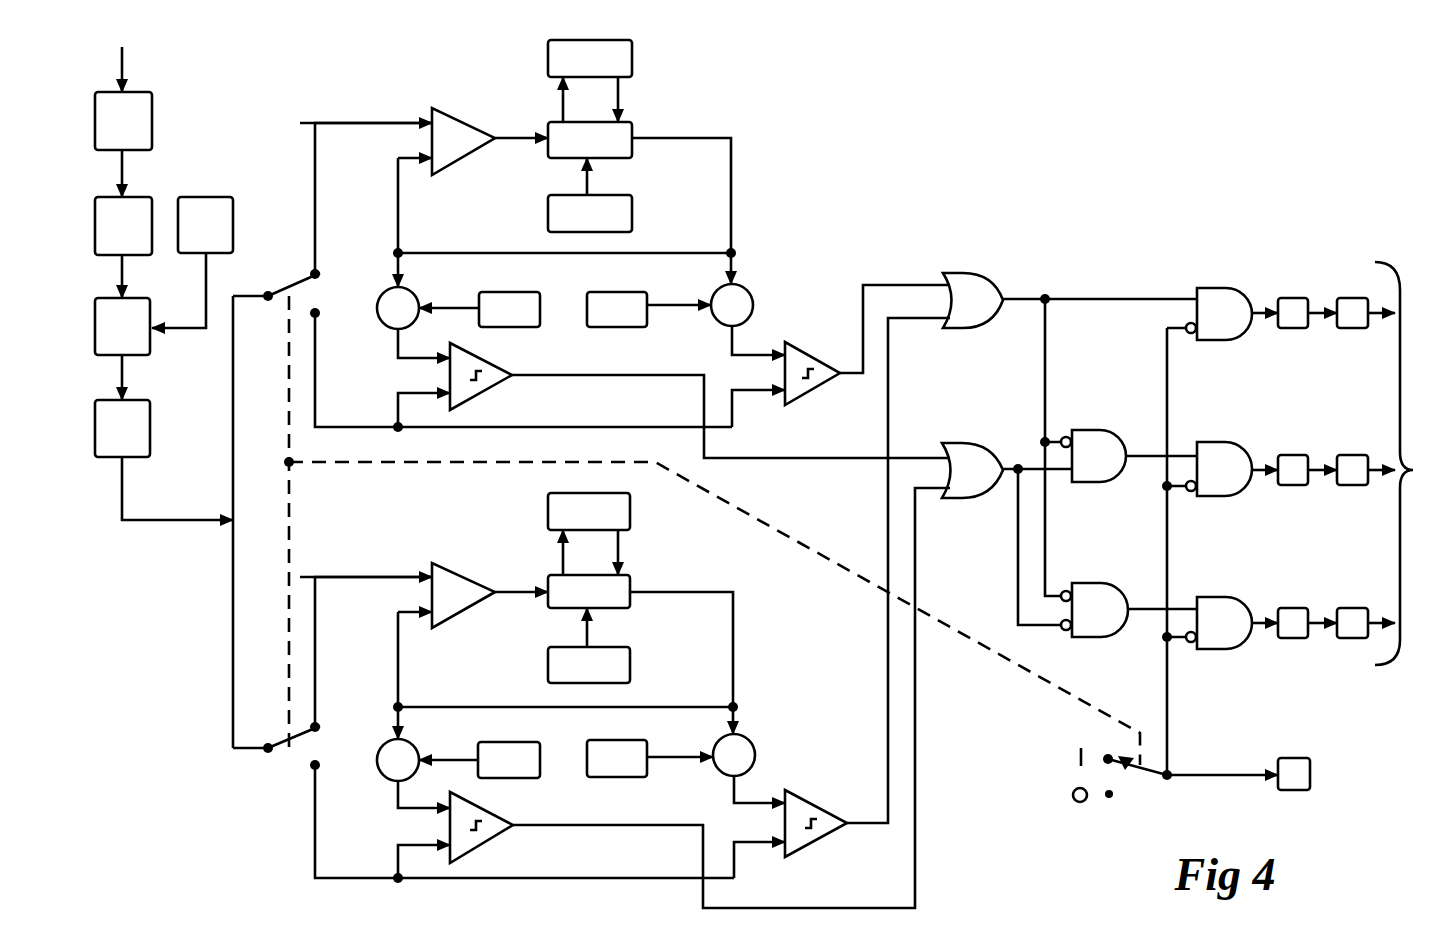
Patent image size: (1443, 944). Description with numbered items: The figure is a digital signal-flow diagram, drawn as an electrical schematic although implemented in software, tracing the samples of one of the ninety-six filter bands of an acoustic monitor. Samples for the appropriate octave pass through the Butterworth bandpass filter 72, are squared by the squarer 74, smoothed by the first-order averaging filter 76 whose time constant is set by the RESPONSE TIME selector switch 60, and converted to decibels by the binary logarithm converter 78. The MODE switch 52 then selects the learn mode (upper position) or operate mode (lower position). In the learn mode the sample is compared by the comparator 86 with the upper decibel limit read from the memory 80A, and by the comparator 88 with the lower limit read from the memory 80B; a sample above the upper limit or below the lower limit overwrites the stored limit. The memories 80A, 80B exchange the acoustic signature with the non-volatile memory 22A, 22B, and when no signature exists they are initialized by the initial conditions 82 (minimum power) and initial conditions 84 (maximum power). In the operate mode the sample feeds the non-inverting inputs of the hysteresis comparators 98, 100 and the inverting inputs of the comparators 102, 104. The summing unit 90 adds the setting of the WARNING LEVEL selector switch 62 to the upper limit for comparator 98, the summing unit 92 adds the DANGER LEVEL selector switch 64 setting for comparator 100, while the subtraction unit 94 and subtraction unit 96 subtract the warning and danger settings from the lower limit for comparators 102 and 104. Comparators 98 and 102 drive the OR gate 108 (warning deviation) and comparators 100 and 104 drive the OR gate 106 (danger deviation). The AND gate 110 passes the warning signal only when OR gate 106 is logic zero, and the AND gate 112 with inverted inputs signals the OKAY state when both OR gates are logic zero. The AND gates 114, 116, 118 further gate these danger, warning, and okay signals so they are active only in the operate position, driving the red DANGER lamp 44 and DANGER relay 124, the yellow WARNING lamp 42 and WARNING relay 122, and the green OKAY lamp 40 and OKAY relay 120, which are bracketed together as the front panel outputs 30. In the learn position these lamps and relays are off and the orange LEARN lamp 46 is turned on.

The bandpass filter 72 is at (152, 118).
The squarer 74 is at (152, 200).
The first-order averaging filter 76 is at (150, 355).
The binary logarithm converter 78 is at (150, 440).
The RESPONSE TIME selector switch 60 is at (233, 225).
The MODE switch 52 is at (1003, 655).
The comparator 86 is at (440, 108).
The comparator 88 is at (445, 563).
The non-volatile memory 22A is at (632, 62).
The non-volatile memory 22B is at (630, 508).
The memory 80A is at (632, 125).
The memory 80B is at (630, 578).
The initial conditions 82 is at (632, 205).
The initial conditions 84 is at (630, 660).
The summing unit 90 is at (377, 310).
The summing unit 92 is at (748, 292).
The subtraction unit 94 is at (377, 763).
The subtraction unit 96 is at (750, 744).
The WARNING LEVEL selector switch 62 is at (520, 327).
The DANGER LEVEL selector switch 64 is at (625, 327).
The comparator 98 is at (492, 390).
The comparator 100 is at (800, 350).
The comparator 102 is at (495, 838).
The comparator 104 is at (815, 840).
The OR gate 106 is at (990, 273).
The OR gate 108 is at (985, 443).
The AND gate 110 is at (1098, 430).
The AND gate 112 is at (1105, 583).
The AND gate 114 is at (1210, 288).
The AND gate 116 is at (1218, 442).
The AND gate 118 is at (1222, 597).
The DANGER lamp 44 is at (1293, 328).
The WARNING lamp 42 is at (1293, 485).
The OKAY lamp 40 is at (1293, 638).
The DANGER relay 124 is at (1365, 272).
The WARNING relay 122 is at (1365, 430).
The OKAY relay 120 is at (1352, 608).
The indicator array 30 is at (1413, 470).
The LEARN lamp 46 is at (1310, 770).